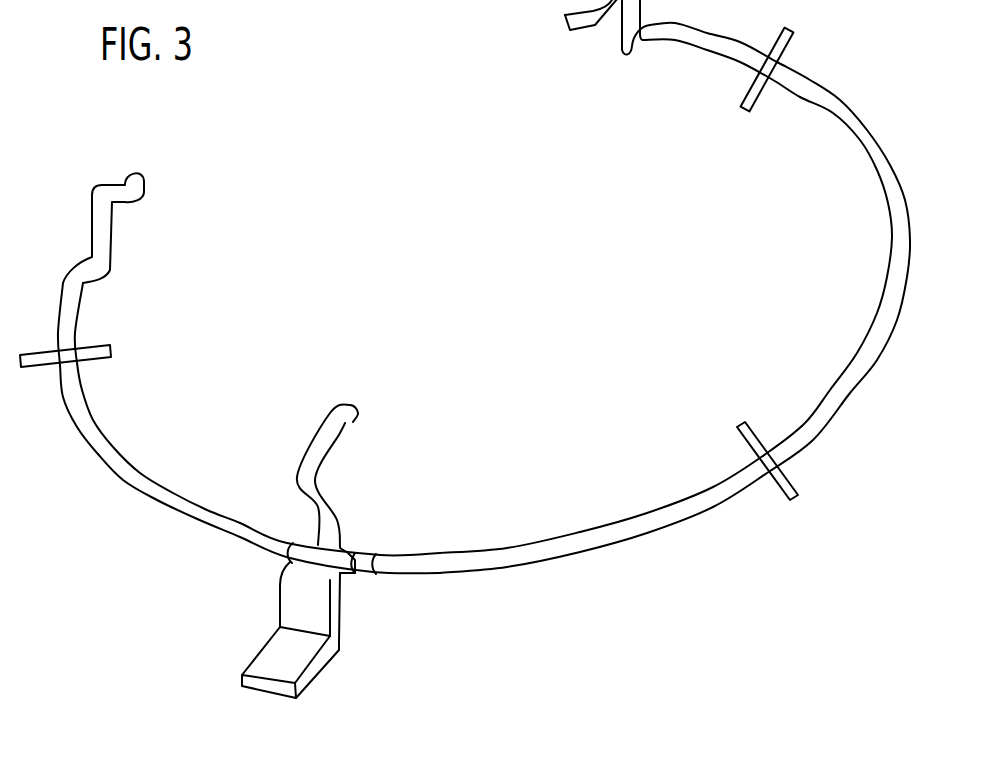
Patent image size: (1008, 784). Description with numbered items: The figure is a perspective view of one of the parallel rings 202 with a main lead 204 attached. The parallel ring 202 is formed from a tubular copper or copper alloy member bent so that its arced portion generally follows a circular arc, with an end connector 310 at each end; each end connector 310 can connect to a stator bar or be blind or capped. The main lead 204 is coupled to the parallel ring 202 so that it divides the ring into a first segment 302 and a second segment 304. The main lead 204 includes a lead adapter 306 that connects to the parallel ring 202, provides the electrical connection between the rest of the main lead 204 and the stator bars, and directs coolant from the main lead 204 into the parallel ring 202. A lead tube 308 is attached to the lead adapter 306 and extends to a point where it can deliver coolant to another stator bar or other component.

The parallel ring 202 is at (465, 316).
The main lead 204 is at (271, 589).
The first segment 302 is at (157, 495).
The second segment 304 is at (553, 550).
The lead adapter 306 is at (338, 560).
The lead tube 308 is at (318, 442).
The end connector 310 is at (128, 192).